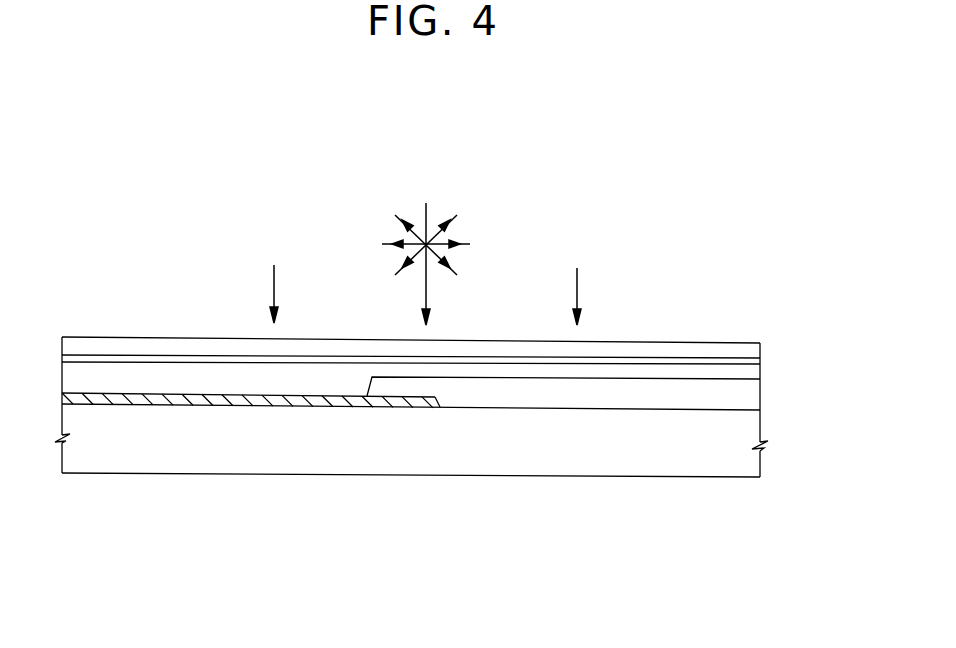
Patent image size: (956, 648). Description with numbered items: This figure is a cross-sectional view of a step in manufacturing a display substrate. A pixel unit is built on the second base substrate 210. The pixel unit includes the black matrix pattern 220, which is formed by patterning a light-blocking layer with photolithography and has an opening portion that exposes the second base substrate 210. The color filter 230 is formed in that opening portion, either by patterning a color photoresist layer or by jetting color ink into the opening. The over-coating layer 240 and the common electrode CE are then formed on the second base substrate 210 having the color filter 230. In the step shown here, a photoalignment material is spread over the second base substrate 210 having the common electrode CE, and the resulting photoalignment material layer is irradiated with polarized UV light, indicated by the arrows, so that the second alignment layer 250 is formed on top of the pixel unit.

The second base substrate 210 is at (204, 438).
The black matrix pattern 220 is at (303, 398).
The color filter 230 is at (418, 387).
The over-coating layer 240 is at (489, 370).
The common electrode CE is at (557, 362).
The second alignment layer 250 is at (625, 351).